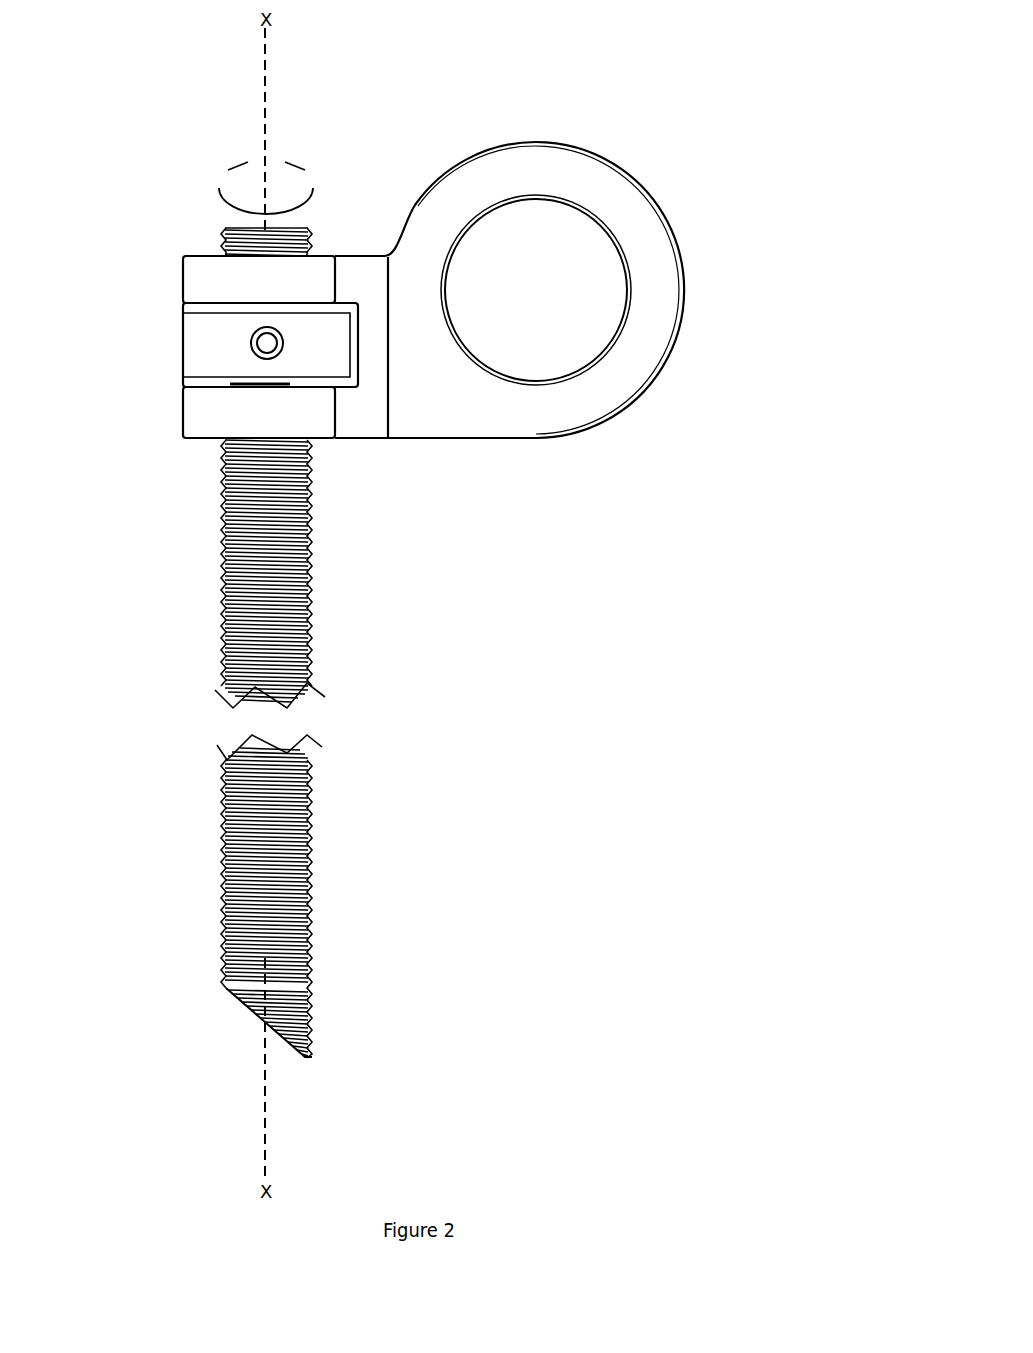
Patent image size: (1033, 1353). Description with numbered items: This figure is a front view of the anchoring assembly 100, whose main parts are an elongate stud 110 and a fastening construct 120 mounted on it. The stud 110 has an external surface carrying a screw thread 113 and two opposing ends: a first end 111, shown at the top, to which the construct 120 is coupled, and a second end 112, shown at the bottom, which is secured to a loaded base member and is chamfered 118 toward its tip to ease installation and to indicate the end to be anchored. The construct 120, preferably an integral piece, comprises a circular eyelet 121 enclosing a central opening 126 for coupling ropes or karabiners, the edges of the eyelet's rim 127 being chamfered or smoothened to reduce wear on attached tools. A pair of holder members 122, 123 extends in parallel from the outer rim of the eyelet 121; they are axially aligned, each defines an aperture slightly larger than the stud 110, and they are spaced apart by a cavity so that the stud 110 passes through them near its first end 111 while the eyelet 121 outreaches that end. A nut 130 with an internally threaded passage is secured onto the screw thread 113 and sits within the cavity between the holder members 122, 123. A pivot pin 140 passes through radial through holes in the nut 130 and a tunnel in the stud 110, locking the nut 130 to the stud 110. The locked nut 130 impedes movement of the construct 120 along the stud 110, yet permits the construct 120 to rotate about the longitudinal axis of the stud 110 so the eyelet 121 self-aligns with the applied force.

The anchoring assembly 100 is at (635, 95).
The stud 110 is at (308, 672).
The first end 111 is at (302, 227).
The second end 112 is at (303, 992).
The screw thread 113 is at (227, 597).
The chamfer 118 is at (250, 1008).
The fastening construct 120 is at (397, 233).
The eyelet 121 is at (595, 408).
The top holder member 122 is at (200, 287).
The bottom holder member 123 is at (187, 417).
The opening 126 is at (587, 237).
The rim of the eyelet 127 is at (630, 288).
The nut 130 is at (202, 342).
The pivot pin 140 is at (267, 352).